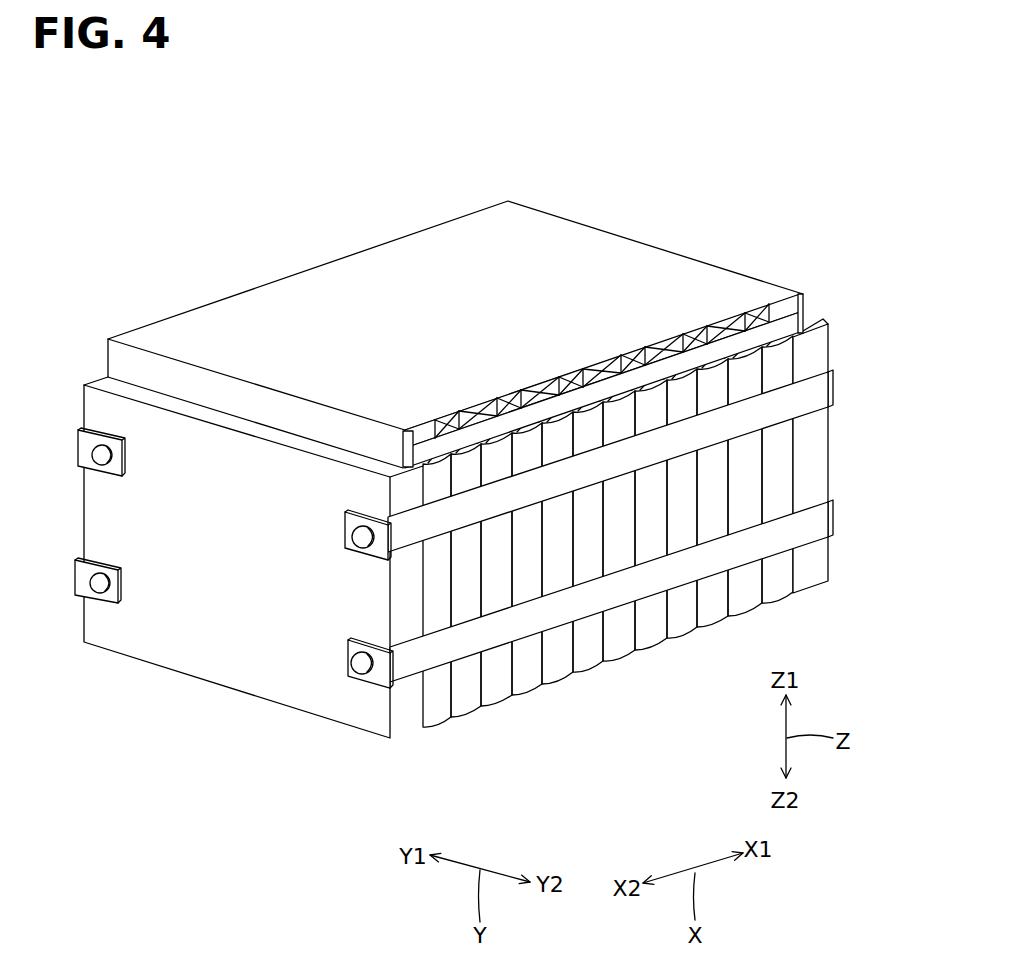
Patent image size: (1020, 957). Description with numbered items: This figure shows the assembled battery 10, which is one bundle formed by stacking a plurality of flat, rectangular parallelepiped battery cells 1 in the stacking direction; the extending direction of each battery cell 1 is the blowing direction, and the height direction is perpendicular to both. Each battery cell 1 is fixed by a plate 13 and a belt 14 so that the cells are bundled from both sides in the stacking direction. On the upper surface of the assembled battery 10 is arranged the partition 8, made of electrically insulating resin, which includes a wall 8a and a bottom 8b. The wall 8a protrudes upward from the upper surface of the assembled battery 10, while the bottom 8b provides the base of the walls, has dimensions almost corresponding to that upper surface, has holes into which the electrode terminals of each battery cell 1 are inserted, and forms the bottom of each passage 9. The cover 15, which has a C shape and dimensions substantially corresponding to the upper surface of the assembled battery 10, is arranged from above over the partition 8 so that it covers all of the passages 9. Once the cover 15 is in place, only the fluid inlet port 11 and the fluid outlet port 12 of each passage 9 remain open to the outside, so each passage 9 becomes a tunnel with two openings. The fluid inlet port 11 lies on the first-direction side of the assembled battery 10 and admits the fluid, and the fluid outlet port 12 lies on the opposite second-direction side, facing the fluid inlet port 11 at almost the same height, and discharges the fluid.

The battery cell 1 is at (650, 637).
The partition 8 is at (602, 284).
The wall 8a is at (763, 318).
The bottom 8b is at (727, 335).
The passage 9 is at (658, 355).
The assembled battery 10 is at (837, 335).
The fluid inlet port 11 is at (455, 330).
The fluid outlet port 12 is at (702, 338).
The plate 13 is at (218, 667).
The belt 14 is at (822, 392).
The cover 15 is at (343, 265).